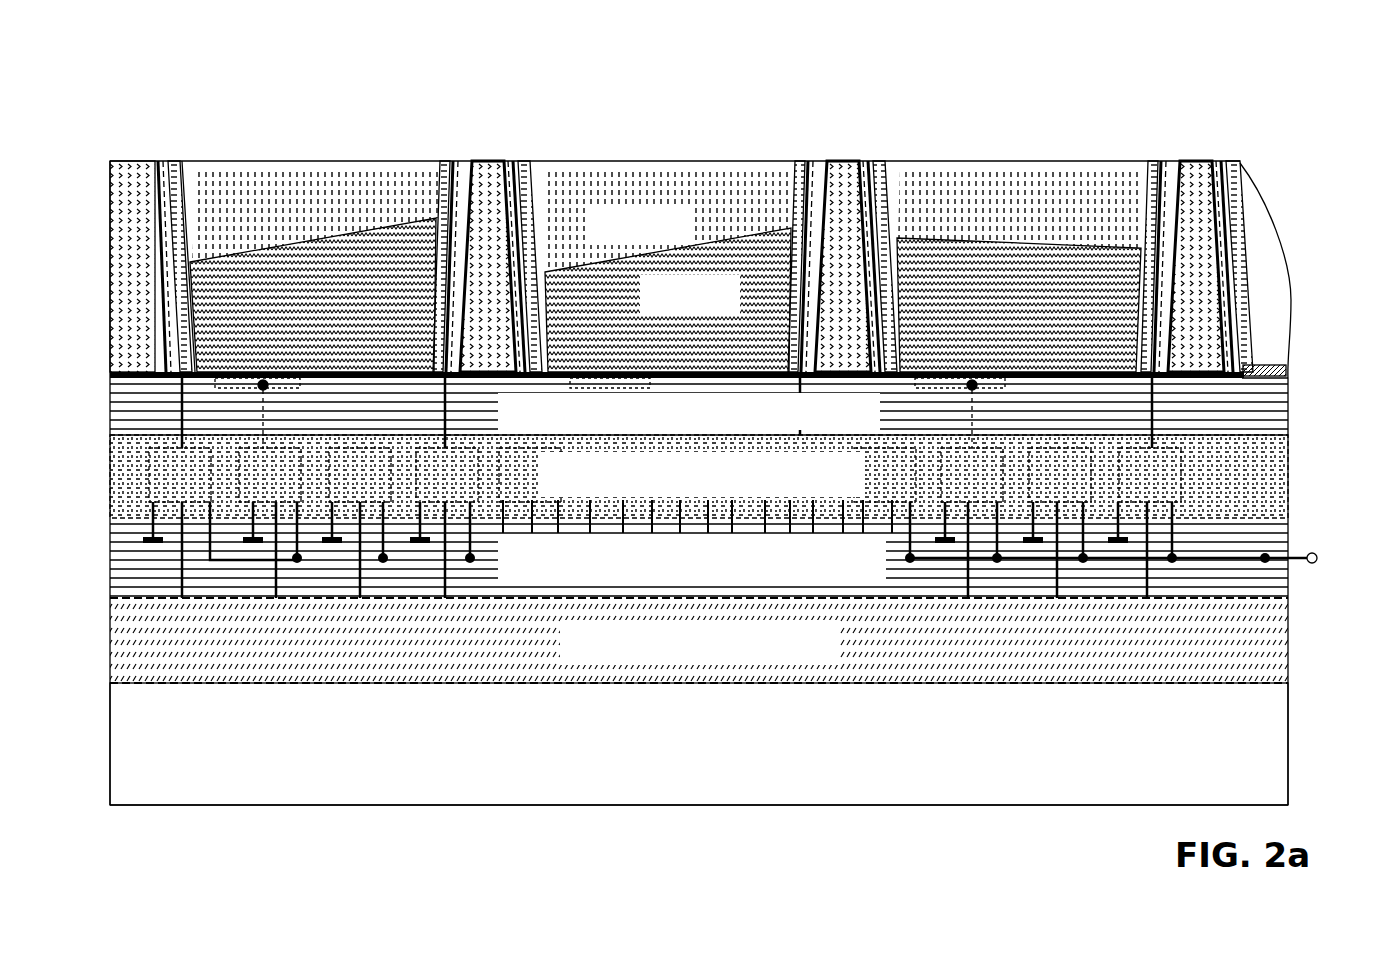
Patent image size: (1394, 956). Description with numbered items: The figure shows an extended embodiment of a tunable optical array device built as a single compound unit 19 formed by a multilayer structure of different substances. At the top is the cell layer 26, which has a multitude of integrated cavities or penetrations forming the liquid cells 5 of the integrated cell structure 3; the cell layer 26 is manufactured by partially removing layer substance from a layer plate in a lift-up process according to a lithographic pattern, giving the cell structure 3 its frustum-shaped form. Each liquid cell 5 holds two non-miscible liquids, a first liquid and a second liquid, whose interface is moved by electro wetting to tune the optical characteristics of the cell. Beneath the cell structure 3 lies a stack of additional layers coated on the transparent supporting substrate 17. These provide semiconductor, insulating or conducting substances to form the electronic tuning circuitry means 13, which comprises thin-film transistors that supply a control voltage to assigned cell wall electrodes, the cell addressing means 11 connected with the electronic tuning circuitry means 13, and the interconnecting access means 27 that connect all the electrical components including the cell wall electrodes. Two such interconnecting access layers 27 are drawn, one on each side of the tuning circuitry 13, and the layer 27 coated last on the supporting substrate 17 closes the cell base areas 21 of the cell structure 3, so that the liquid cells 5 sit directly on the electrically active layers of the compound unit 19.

The single compound unit 19 is at (307, 83).
The cell layer 26 is at (130, 215).
The liquid cell 5 is at (187, 198).
The cell structure 3 is at (400, 195).
The cell base area 21 is at (1020, 355).
The interconnecting access means 27 is at (1255, 415).
The electronic tuning circuitry means 13 is at (1258, 485).
The cell addressing means 11 is at (1255, 642).
The supporting substrate 17 is at (1255, 760).